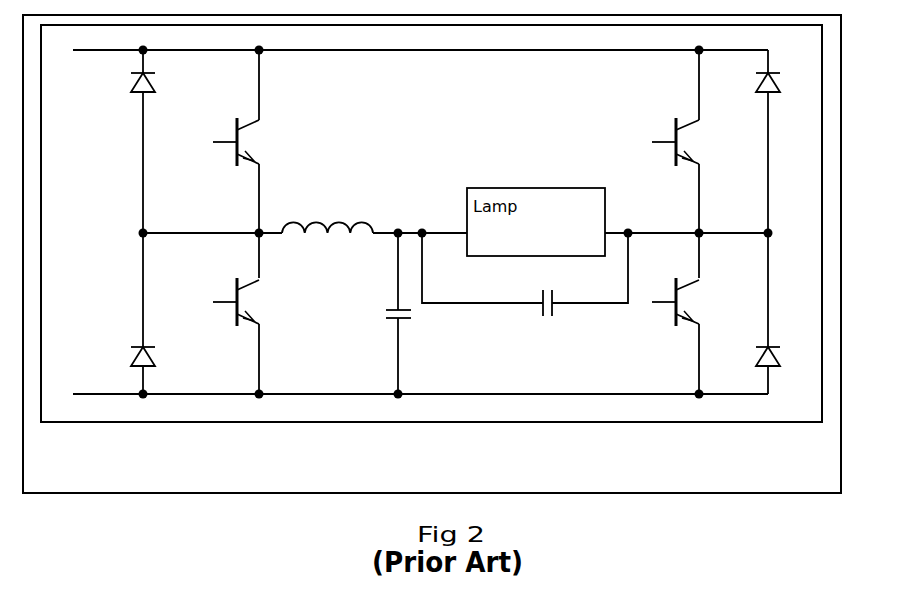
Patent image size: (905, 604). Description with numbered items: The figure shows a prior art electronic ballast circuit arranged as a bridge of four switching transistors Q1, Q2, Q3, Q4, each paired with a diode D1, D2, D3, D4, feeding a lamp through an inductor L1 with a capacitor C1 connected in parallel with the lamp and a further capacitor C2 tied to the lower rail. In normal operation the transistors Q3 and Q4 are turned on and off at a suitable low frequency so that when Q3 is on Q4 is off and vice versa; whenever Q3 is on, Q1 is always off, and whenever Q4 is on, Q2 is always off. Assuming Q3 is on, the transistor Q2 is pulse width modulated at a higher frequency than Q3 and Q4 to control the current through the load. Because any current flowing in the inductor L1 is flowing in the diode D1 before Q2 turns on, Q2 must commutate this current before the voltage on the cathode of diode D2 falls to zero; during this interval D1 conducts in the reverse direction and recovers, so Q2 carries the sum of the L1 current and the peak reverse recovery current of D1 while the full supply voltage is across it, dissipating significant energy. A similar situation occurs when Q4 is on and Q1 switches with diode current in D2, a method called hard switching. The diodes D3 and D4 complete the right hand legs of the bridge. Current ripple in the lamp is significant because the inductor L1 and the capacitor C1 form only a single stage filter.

The diode D1 is at (123, 80).
The diode D2 is at (123, 356).
The diode D3 is at (748, 80).
The diode D4 is at (748, 356).
The transistor Q1 is at (236, 129).
The transistor Q2 is at (236, 289).
The transistor Q3 is at (675, 129).
The transistor Q4 is at (675, 289).
The inductor L1 is at (327, 214).
The capacitor C1 is at (525, 287).
The capacitor C2 is at (379, 313).